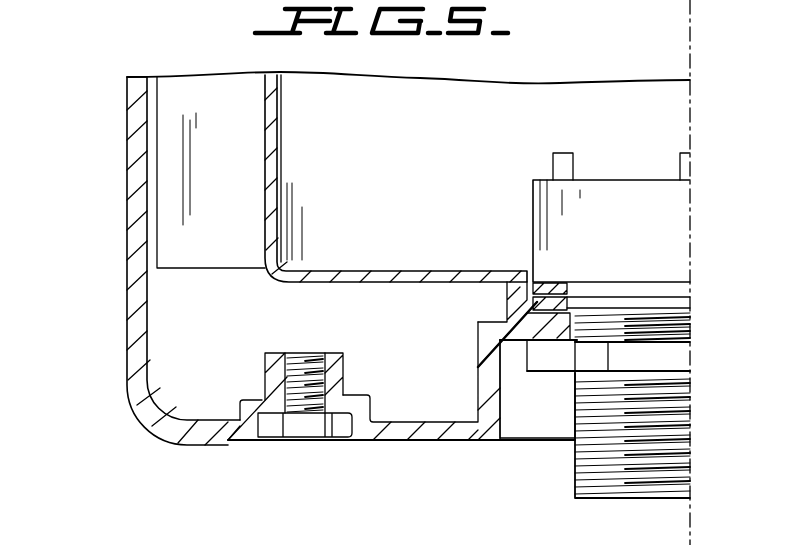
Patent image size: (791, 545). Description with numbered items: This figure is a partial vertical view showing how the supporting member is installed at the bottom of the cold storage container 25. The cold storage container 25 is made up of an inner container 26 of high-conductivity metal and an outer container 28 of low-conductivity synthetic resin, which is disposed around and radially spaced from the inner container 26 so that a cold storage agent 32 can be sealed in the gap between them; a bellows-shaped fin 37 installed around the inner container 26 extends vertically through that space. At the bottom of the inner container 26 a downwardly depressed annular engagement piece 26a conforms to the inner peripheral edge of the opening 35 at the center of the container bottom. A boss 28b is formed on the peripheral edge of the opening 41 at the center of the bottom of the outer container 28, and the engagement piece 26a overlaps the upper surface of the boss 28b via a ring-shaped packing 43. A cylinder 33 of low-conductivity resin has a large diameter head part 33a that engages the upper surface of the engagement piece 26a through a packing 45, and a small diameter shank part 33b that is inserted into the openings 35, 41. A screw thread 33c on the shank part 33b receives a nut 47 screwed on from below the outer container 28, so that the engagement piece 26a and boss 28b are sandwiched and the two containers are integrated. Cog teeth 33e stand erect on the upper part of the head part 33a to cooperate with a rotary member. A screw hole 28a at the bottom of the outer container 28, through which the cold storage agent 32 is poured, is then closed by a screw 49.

The cold storage container 25 is at (127, 209).
The inner container 26 is at (311, 130).
The annular engagement piece 26a is at (553, 297).
The outer container 28 is at (127, 140).
The screw hole 28a is at (343, 373).
The boss 28b is at (478, 373).
The cold storage agent 32 is at (308, 318).
The cylinder 33 is at (627, 180).
The large diameter head part 33a is at (560, 207).
The small diameter shank part 33b is at (590, 460).
The screw thread 33c is at (628, 460).
The cog teeth 33e is at (562, 167).
The opening 35 is at (600, 297).
The bellows-shaped fin 37 is at (222, 253).
The opening 41 is at (578, 338).
The ring-shaped packing 43 is at (507, 304).
The packing 45 is at (548, 283).
The nut 47 is at (698, 363).
The screw 49 is at (330, 440).